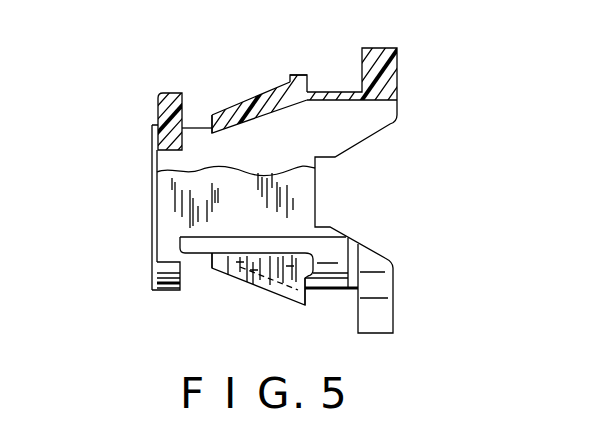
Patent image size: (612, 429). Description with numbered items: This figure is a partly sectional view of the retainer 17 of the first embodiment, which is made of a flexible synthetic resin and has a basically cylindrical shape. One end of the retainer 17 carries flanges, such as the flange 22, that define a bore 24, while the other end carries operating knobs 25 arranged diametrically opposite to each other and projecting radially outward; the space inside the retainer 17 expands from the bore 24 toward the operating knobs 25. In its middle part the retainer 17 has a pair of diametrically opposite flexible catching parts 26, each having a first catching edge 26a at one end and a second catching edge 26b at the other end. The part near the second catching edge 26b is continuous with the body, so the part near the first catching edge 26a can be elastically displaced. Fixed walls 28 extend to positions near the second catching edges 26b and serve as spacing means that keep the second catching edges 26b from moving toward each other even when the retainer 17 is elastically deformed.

The retainer 17 is at (298, 58).
The flange 22 is at (160, 97).
The bore 24 is at (160, 160).
The operating knob 25 is at (397, 57).
The flexible catching part 26 is at (255, 110).
The first catching edge 26a is at (220, 112).
The second catching edge 26b is at (282, 103).
The fixed wall 28 is at (293, 205).